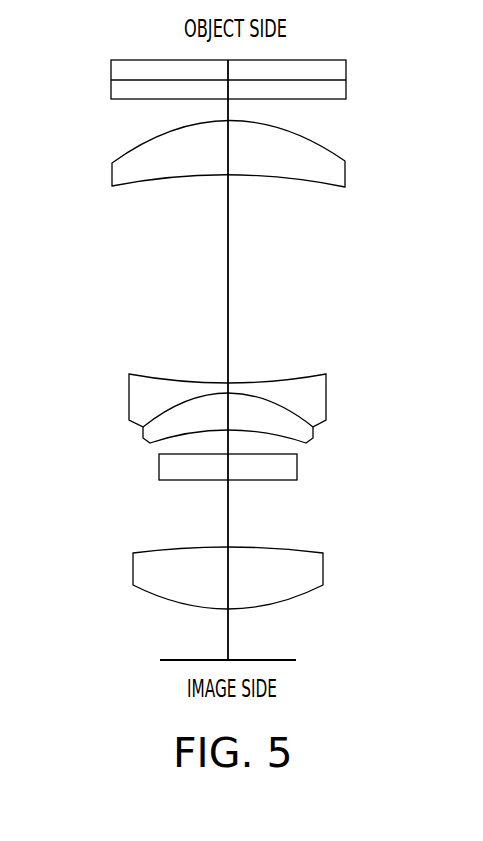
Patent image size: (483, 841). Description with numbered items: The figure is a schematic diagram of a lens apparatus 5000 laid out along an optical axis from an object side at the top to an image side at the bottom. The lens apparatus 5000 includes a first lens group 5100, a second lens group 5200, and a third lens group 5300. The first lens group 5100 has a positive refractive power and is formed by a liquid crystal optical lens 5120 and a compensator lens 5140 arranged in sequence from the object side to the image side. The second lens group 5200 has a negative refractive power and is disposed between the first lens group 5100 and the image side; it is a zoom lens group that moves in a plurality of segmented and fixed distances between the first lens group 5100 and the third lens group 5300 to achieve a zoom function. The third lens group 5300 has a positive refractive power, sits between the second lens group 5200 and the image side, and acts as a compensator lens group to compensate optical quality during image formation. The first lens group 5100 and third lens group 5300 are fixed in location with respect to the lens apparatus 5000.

The lens apparatus 5000 is at (456, 703).
The first lens group 5100 is at (245, 130).
The liquid crystal optical lens 5120 is at (363, 57).
The compensator lens 5140 is at (333, 172).
The second lens group 5200 is at (95, 372).
The third lens group 5300 is at (95, 543).